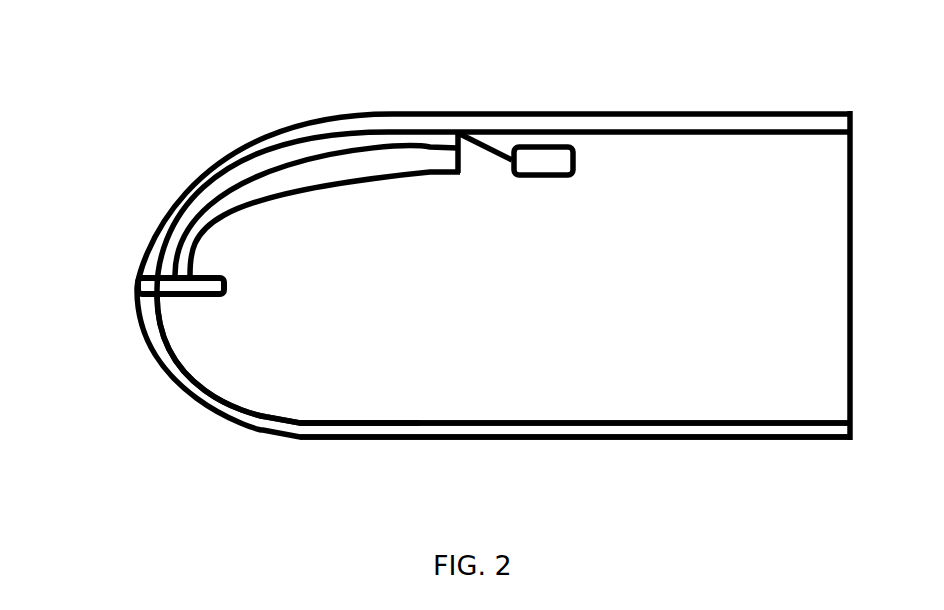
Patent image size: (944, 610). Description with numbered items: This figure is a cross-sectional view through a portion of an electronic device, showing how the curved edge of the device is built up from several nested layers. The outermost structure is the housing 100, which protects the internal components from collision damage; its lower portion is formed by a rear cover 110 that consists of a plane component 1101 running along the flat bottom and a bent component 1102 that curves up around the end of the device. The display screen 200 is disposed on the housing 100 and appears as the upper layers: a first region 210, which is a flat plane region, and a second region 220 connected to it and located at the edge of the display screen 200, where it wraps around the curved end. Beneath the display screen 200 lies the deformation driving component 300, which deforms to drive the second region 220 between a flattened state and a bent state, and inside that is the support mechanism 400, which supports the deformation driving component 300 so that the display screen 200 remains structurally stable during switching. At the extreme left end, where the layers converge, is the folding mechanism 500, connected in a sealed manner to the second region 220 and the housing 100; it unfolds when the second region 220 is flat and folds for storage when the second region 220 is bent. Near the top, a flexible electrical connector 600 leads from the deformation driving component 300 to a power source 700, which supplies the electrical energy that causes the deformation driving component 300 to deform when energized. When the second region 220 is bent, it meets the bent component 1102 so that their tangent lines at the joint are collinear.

The housing 100 is at (703, 440).
The rear cover 110 is at (294, 413).
The plane component 1101 is at (412, 430).
The bent component 1102 is at (219, 395).
The display screen 200 is at (493, 240).
The first region 210 is at (643, 130).
The second region 220 is at (330, 132).
The deformation driving component 300 is at (273, 165).
The support mechanism 400 is at (230, 207).
The folding mechanism 500 is at (140, 278).
The flexible electrical connector 600 is at (489, 143).
The power source 700 is at (548, 165).